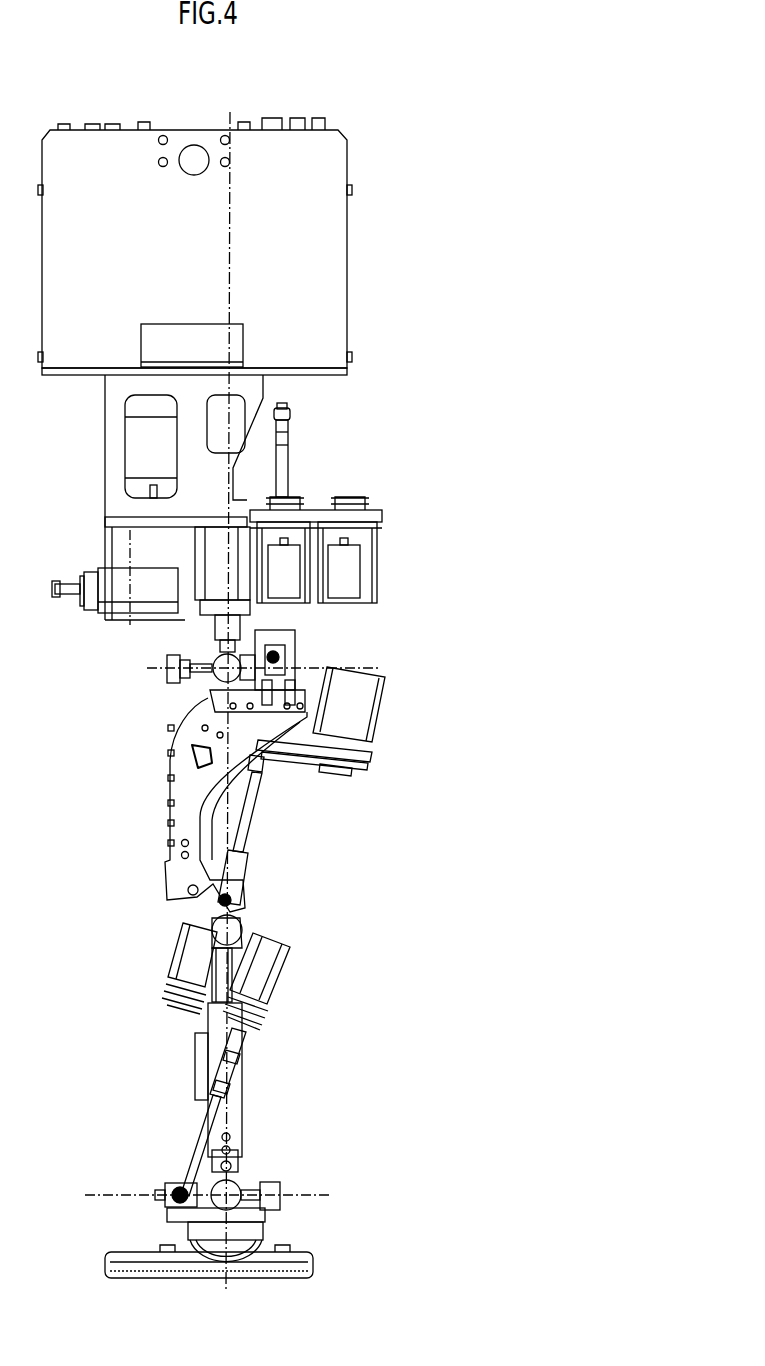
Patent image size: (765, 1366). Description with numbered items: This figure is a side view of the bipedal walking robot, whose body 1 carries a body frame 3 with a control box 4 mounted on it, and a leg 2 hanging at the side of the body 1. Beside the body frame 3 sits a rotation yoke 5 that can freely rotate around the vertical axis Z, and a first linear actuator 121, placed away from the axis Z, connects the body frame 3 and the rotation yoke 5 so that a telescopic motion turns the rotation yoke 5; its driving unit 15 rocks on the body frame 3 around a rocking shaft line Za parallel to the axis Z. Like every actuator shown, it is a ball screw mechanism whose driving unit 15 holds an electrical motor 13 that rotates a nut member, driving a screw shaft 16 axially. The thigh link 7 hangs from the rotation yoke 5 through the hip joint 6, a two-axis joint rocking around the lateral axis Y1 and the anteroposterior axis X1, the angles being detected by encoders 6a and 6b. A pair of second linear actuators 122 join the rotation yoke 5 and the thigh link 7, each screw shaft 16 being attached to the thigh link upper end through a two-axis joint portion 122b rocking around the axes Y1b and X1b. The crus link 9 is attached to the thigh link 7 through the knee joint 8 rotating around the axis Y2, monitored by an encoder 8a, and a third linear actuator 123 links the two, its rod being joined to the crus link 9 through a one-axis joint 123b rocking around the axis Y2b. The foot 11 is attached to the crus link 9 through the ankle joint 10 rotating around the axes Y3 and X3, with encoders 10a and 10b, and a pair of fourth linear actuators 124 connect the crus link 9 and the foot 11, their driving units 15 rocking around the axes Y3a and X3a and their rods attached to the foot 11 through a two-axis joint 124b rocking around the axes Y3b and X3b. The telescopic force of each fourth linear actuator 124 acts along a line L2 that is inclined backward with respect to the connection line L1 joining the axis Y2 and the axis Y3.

The body 1 is at (364, 381).
The leg 2 is at (151, 838).
The body frame 3 is at (277, 378).
The control box 4 is at (350, 268).
The rotation yoke 5 is at (200, 633).
The hip joint 6 is at (300, 612).
The encoder 6a is at (222, 690).
The encoder 6b is at (165, 667).
The thigh link 7 is at (168, 762).
The knee joint 8 is at (248, 922).
The encoder 8a is at (212, 918).
The crus link 9 is at (242, 1075).
The ankle joint 10 is at (246, 1182).
The encoder 10a is at (250, 1218).
The encoder 10b is at (285, 1192).
The foot 11 is at (312, 1256).
The electrical motor 13 is at (118, 568).
The driving unit 15 is at (390, 518).
The screw shaft 16 is at (288, 455).
The first linear actuator 121 is at (92, 620).
The second linear actuator 122 is at (300, 492).
The 2-axis joint portion 122b is at (280, 657).
The third linear actuator 123 is at (375, 760).
The 1-axis joint 123b is at (235, 892).
The fourth linear actuator 124 is at (172, 943).
The 2-axis joint 124b is at (178, 1188).
The vertical axis Z is at (232, 272).
The rocking shaft line Za is at (133, 546).
The anteroposterior axis X1 is at (148, 672).
The rocking shaft line X1b is at (345, 668).
The lateral axis Y1 is at (214, 680).
The rocking shaft line Y1b is at (357, 695).
The lateral axis Y2 is at (268, 948).
The rocking shaft line Y2b is at (233, 902).
The lateral axis Y3 is at (236, 1185).
The rocking shaft line Y3a is at (265, 990).
The rocking shaft line X3a is at (280, 1000).
The anteroposterior axis X3 is at (300, 1196).
The rocking shaft line Y3b is at (163, 1190).
The rocking shaft line X3b is at (148, 1196).
The connection line L1 is at (240, 1118).
The action line L2 is at (205, 1118).